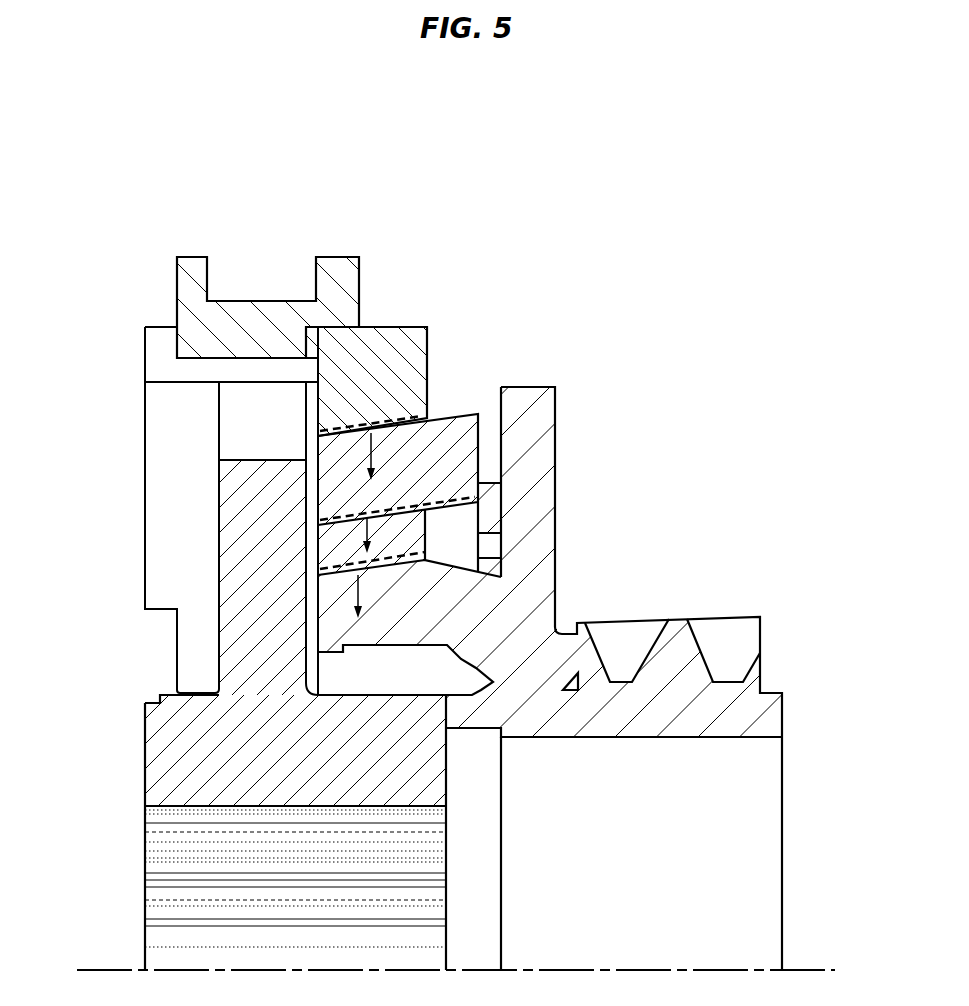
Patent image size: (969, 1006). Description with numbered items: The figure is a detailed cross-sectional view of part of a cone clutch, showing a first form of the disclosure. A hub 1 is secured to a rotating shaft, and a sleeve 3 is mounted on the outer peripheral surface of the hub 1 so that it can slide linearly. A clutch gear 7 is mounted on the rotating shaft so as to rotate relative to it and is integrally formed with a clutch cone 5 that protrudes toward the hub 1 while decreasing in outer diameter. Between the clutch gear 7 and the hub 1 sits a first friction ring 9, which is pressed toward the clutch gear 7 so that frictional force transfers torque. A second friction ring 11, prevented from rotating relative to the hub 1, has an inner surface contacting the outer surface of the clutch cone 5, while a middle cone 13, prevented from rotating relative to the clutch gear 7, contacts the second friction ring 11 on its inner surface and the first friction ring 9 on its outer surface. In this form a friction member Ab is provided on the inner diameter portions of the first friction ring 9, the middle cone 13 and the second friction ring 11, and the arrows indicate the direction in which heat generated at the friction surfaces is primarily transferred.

The hub 1 is at (160, 745).
The sleeve 3 is at (338, 265).
The clutch cone 5 is at (335, 628).
The clutch gear 7 is at (758, 718).
The first friction ring 9 is at (410, 340).
The second friction ring 11 is at (410, 533).
The middle cone 13 is at (458, 445).
The friction member Ab is at (397, 425).